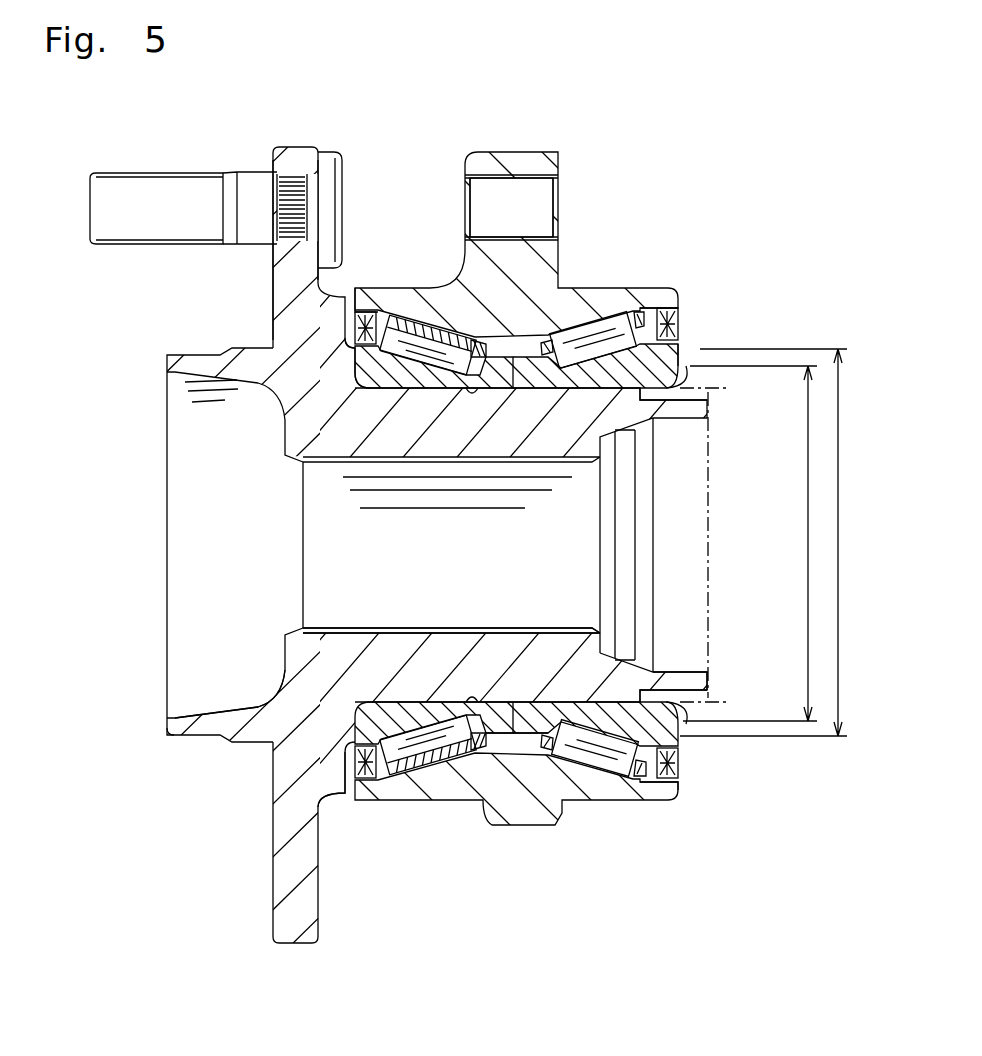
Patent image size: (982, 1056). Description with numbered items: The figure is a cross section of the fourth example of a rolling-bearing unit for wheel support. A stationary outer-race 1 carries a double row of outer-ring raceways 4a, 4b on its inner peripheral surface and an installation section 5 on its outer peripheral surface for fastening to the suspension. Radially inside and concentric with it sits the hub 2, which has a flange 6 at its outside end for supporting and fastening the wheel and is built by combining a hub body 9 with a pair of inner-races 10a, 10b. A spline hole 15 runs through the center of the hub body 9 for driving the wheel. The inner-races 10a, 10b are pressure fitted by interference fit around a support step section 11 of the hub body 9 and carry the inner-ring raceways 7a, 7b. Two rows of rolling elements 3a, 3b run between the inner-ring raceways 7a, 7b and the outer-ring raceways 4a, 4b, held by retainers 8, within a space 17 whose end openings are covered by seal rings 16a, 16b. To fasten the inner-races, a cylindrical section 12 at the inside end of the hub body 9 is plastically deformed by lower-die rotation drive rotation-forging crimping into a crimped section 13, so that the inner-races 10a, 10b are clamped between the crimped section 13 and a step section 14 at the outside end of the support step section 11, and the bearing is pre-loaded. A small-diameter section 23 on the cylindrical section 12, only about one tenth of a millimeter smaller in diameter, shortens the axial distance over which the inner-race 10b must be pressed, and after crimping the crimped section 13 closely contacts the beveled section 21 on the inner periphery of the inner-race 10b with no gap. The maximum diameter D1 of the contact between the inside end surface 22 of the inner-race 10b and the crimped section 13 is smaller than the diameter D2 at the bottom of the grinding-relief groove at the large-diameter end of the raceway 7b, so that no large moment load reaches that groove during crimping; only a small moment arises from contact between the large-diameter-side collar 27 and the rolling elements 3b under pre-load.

The outer-race 1 is at (582, 300).
The hub 2 is at (293, 423).
The rolling elements 3a is at (425, 358).
The rolling elements 3b is at (610, 355).
The outer-ring raceway 4a is at (417, 327).
The outer-ring raceway 4b is at (560, 328).
The installation section 5 is at (477, 171).
The flange 6 is at (283, 283).
The inner-ring raceway 7a is at (416, 762).
The inner-ring raceway 7b is at (557, 752).
The retainers 8 is at (667, 330).
The hub body 9 is at (300, 652).
The inner-race 10a is at (297, 750).
The inner-race 10b is at (683, 732).
The support step section 11 is at (473, 390).
The cylindrical section 12 is at (684, 408).
The crimped section 13 is at (684, 362).
The step section 14 is at (356, 361).
The spline hole 15 is at (523, 632).
The seal ring 16a is at (370, 286).
The seal ring 16b is at (682, 766).
The space 17 is at (498, 748).
The beveled section 21 is at (688, 380).
The inside end surface 22 is at (683, 720).
The small-diameter section 23 is at (685, 392).
The large-diameter-side collar 27 is at (668, 340).
The maximum diameter D1 is at (750, 543).
The diameter D2 is at (766, 542).